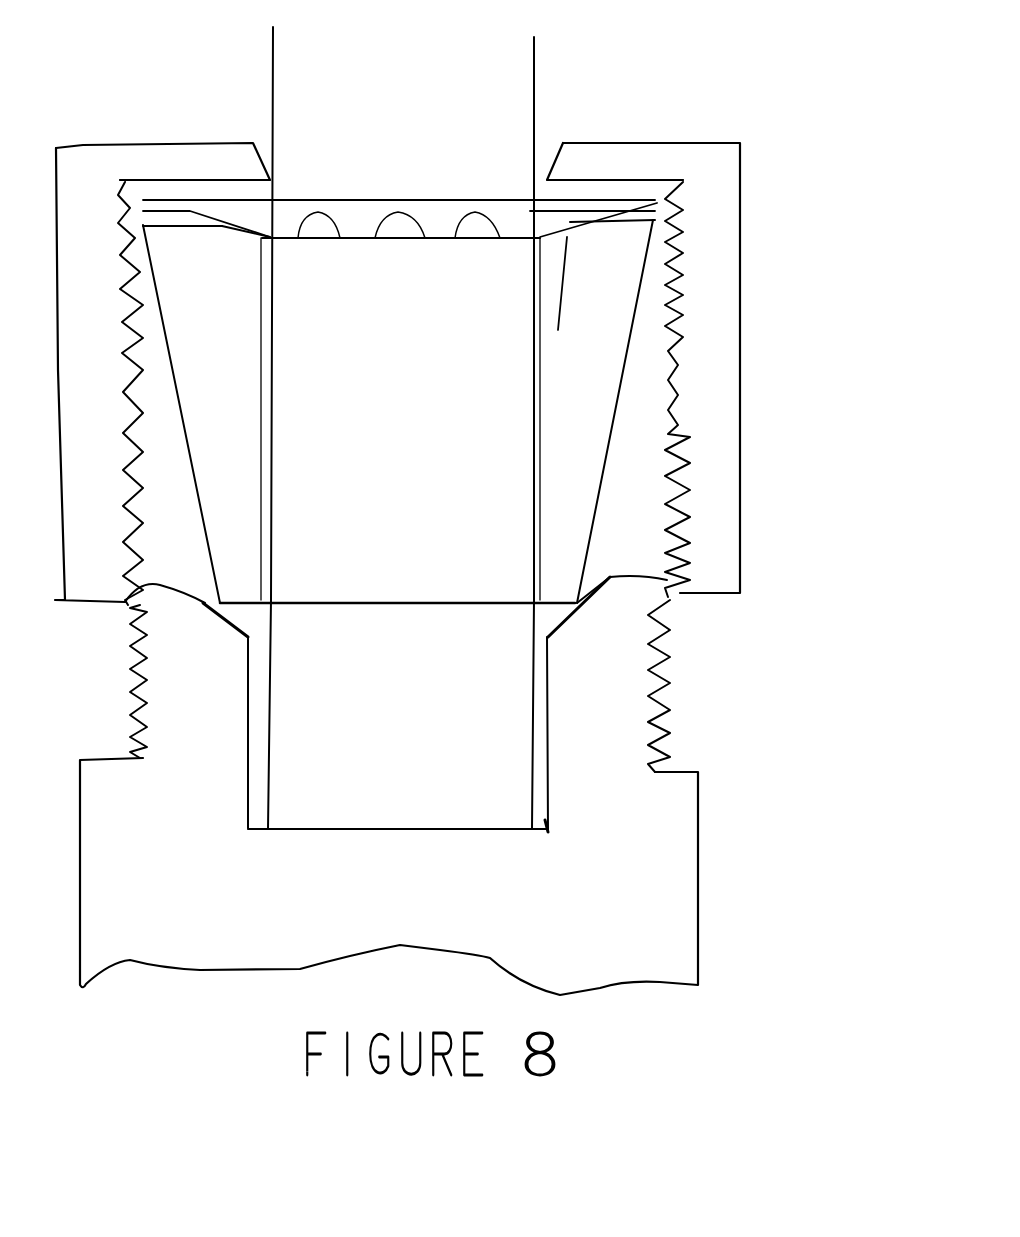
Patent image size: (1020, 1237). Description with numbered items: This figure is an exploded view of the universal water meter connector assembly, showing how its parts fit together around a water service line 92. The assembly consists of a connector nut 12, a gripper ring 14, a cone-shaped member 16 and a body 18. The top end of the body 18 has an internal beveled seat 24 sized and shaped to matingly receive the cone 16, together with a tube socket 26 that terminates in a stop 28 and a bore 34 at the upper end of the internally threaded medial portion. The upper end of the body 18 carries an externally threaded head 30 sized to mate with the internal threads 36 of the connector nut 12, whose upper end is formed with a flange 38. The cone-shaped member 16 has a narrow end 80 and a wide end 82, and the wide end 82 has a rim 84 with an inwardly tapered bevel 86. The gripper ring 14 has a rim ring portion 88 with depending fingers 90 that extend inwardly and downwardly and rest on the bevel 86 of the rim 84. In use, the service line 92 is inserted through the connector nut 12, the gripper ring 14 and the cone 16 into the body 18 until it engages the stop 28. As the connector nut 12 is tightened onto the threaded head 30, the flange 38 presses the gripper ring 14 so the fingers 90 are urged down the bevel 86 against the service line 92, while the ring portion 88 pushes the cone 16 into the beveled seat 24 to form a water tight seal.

The connector nut 12 is at (835, 302).
The gripper ring 14 is at (418, 137).
The cone 16 is at (800, 236).
The body 18 is at (792, 840).
The internal beveled seat 24 is at (570, 610).
The tube socket 26 is at (333, 670).
The stop 28 is at (303, 853).
The externally threaded head 30 is at (752, 670).
The bore 34 is at (583, 863).
The internal threads 36 is at (840, 416).
The flange 38 is at (208, 185).
The narrow end 80 is at (380, 603).
The wide end 82 is at (485, 292).
The rim 84 is at (610, 258).
The inwardly tapered bevel 86 is at (581, 302).
The rim ring portion 88 is at (470, 205).
The depending fingers 90 is at (462, 243).
The water service line 92 is at (628, 18).